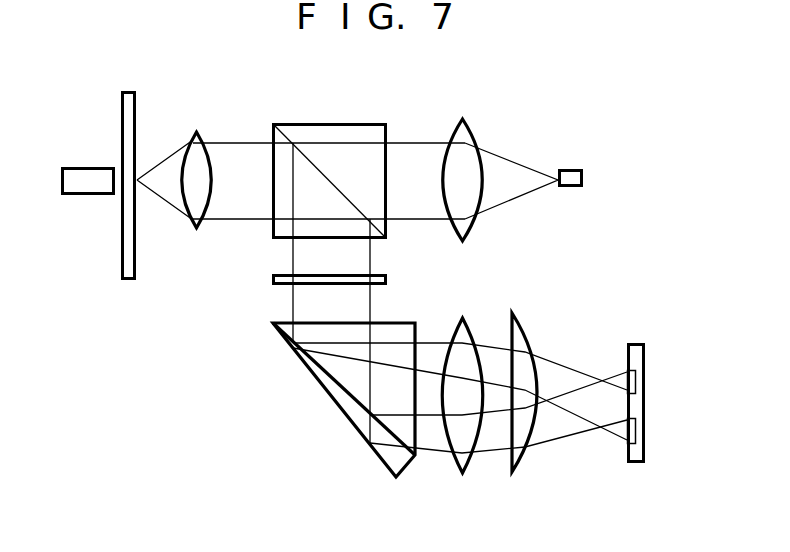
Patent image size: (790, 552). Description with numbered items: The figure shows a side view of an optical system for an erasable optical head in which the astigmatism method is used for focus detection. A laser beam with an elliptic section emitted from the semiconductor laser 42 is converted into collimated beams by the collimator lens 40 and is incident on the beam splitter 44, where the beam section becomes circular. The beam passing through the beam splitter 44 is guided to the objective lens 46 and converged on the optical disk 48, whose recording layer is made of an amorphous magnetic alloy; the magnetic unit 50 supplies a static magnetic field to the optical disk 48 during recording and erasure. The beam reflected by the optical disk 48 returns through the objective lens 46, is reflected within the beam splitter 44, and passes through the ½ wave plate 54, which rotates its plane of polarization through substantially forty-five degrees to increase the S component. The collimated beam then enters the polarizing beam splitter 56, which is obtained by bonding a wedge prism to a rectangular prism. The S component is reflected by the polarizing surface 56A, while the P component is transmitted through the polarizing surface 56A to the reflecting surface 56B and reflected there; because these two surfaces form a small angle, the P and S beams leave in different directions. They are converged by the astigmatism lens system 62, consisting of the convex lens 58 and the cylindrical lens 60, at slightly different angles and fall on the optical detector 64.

The collimator lens 40 is at (452, 136).
The semiconductor laser 42 is at (567, 168).
The beam splitter 44 is at (332, 123).
The objective lens 46 is at (193, 134).
The optical disk 48 is at (137, 112).
The magnetic unit 50 is at (95, 167).
The ½ wave plate 54 is at (386, 275).
The polarizing beam splitter 56 is at (342, 382).
The polarizing surface 56A is at (330, 379).
The reflecting surface 56B is at (352, 422).
The convex lens 58 is at (468, 321).
The cylindrical lens 60 is at (530, 326).
The astigmatism lens system 62 is at (488, 468).
The optical detector 64 is at (645, 372).